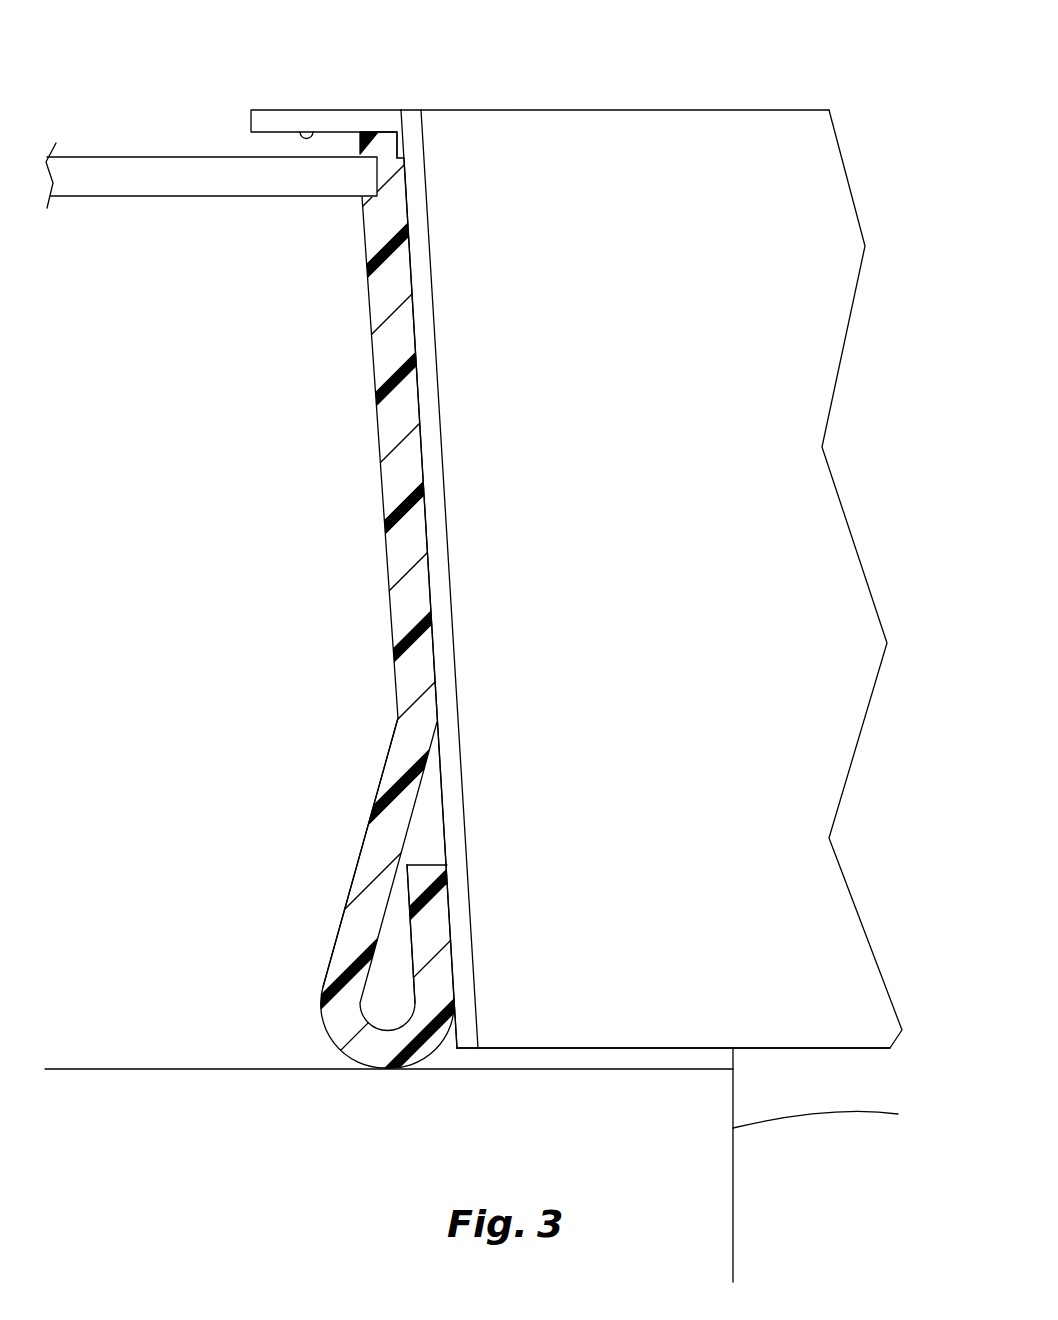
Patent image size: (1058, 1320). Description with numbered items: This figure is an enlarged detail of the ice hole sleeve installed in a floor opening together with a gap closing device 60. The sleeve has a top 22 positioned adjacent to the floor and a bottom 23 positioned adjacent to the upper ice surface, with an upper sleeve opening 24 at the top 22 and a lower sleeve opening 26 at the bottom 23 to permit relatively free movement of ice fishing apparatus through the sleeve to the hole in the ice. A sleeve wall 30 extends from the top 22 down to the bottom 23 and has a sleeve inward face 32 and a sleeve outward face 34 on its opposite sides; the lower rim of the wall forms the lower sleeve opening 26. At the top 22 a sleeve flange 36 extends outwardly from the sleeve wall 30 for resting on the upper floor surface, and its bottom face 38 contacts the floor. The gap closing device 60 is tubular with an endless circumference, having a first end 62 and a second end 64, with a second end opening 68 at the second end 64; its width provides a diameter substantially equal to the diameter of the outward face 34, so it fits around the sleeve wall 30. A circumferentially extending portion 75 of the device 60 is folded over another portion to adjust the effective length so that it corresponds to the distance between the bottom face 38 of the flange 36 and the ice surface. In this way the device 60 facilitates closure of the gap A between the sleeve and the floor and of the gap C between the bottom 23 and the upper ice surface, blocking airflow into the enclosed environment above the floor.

The top 22 is at (685, 98).
The bottom 23 is at (582, 1053).
The upper sleeve opening 24 is at (548, 97).
The lower sleeve opening 26 is at (600, 1030).
The sleeve wall 30 is at (445, 660).
The sleeve inward face 32 is at (450, 573).
The sleeve outward face 34 is at (440, 805).
The sleeve flange 36 is at (342, 115).
The bottom face 38 is at (312, 132).
The gap closing device 60 is at (387, 485).
The first end 62 is at (383, 132).
The second end 64 is at (433, 858).
The second end opening 68 is at (443, 1053).
The circumferentially extending portion 75 is at (437, 963).
The gap A is at (347, 146).
The gap C is at (489, 1053).